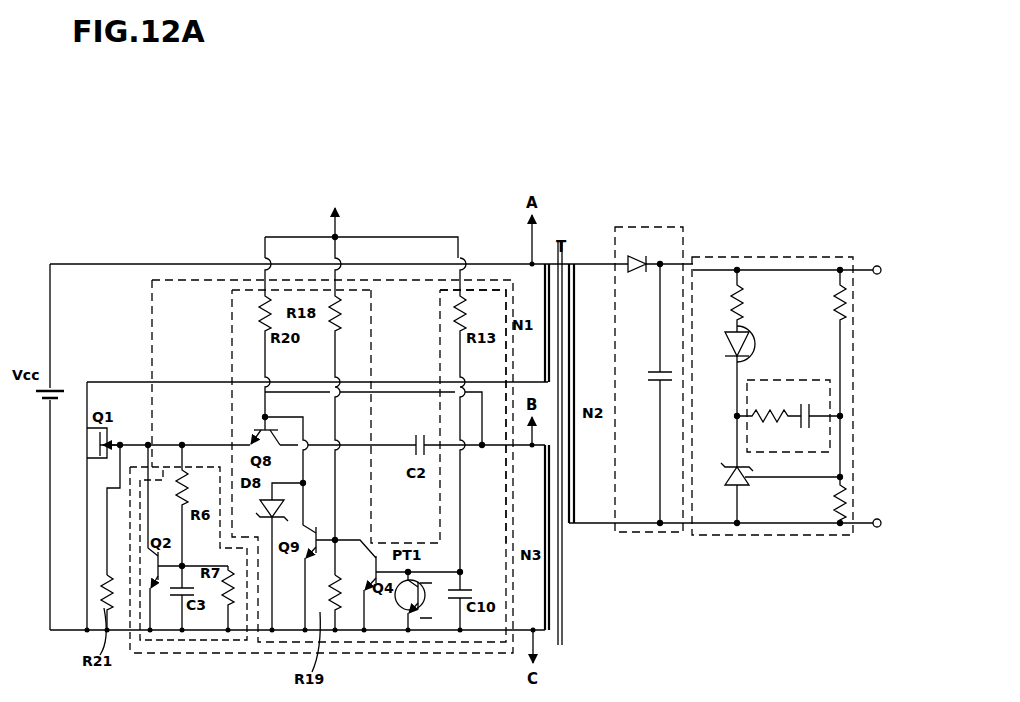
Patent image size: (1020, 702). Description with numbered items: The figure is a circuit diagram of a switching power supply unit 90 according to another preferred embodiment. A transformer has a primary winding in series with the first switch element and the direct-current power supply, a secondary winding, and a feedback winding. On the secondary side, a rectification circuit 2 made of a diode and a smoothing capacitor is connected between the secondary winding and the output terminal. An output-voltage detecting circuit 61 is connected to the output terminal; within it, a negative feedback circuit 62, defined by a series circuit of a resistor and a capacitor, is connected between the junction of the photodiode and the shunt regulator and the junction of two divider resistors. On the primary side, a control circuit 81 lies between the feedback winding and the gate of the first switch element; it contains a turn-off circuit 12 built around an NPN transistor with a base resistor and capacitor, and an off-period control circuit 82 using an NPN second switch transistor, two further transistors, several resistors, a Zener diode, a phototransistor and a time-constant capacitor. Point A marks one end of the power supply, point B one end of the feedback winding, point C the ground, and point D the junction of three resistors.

The switching power supply unit 90 is at (296, 208).
The control circuit 81 is at (222, 280).
The off-period control circuit 82 is at (480, 290).
The turn-off circuit 12 is at (198, 445).
The rectification circuit 2 is at (658, 227).
The output-voltage detecting circuit 61 is at (745, 257).
The negative feedback circuit 62 is at (770, 380).